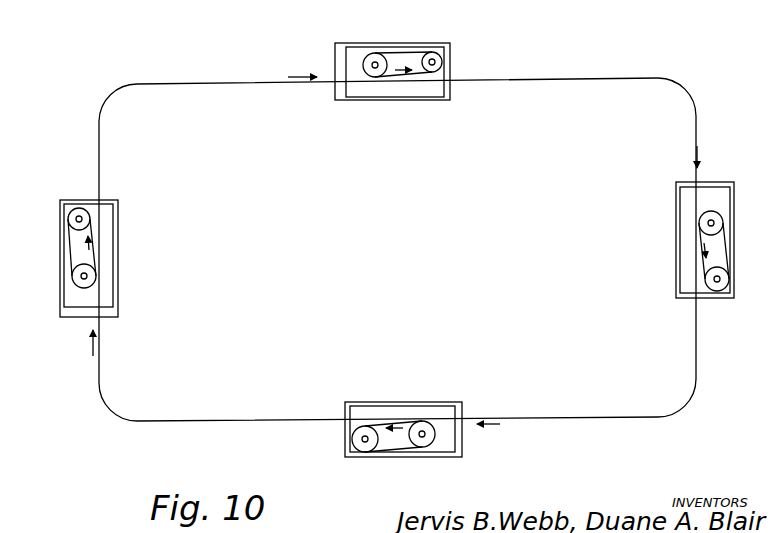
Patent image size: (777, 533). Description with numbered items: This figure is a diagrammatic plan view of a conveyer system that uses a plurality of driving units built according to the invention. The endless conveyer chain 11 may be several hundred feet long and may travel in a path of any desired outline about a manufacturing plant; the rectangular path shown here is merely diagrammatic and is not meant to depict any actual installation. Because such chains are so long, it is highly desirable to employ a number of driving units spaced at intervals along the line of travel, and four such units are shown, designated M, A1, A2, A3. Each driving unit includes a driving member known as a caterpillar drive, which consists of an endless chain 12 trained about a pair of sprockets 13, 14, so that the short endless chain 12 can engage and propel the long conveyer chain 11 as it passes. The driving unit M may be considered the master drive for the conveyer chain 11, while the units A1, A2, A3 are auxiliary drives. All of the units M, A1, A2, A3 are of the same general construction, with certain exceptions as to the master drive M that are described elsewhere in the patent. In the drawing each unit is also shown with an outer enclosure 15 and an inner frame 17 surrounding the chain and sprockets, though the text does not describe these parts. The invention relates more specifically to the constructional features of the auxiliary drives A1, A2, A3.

The endless conveyer chain 11 is at (580, 78).
The endless chain 12 is at (400, 47).
The sprocket 13 is at (373, 54).
The sprocket 14 is at (433, 52).
The drive unit housing 15 is at (351, 100).
The drive unit frame 17 is at (432, 98).
The master drive M is at (120, 256).
The auxiliary drive A1 is at (402, 100).
The auxiliary drive A2 is at (673, 245).
The auxiliary drive A3 is at (418, 381).